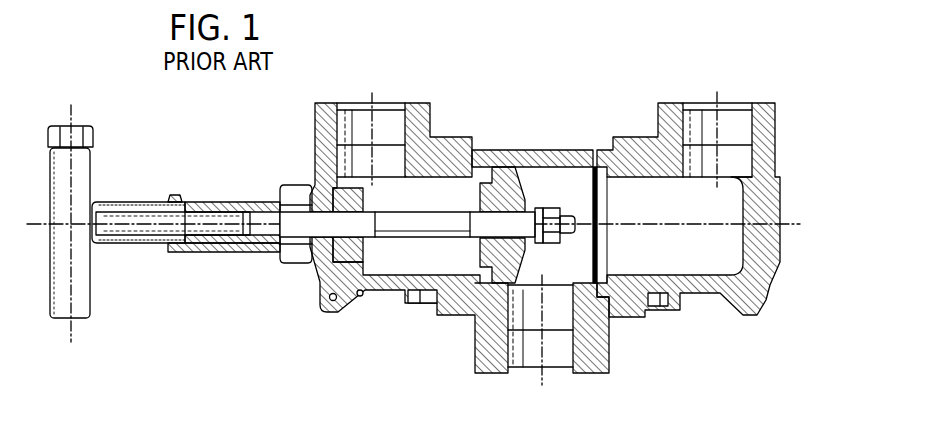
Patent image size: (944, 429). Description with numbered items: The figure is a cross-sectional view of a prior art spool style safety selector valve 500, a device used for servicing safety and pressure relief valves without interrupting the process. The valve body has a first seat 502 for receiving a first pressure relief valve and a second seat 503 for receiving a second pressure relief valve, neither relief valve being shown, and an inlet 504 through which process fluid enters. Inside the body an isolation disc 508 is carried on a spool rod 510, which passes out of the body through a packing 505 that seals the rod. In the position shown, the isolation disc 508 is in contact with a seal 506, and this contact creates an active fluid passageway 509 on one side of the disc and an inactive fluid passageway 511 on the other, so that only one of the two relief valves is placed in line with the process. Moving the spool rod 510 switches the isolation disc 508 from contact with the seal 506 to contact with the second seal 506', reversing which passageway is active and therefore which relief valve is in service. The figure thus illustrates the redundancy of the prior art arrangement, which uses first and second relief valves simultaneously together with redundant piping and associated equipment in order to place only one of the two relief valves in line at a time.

The valve assembly 500 is at (785, 171).
The first seat 502 is at (398, 103).
The second seat 503 is at (744, 103).
The inlet 504 is at (567, 372).
The packing 505 is at (321, 270).
The seal 506 is at (443, 322).
The seal 506' is at (606, 184).
The isolation disc 508 is at (527, 205).
The active fluid passageway 509 is at (708, 214).
The spool rod 510 is at (420, 224).
The inactive fluid passageway 511 is at (423, 266).